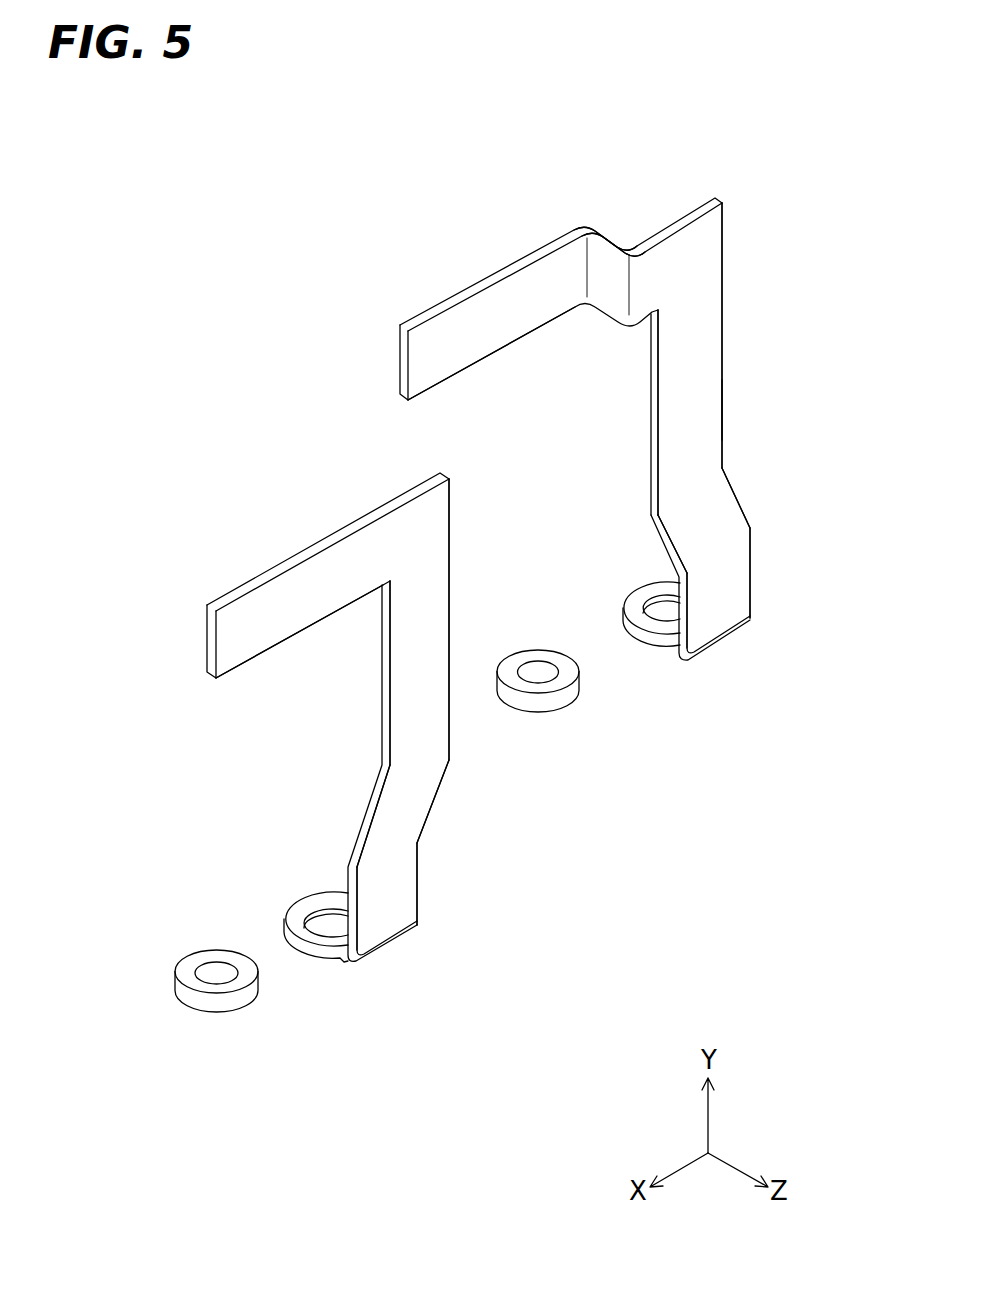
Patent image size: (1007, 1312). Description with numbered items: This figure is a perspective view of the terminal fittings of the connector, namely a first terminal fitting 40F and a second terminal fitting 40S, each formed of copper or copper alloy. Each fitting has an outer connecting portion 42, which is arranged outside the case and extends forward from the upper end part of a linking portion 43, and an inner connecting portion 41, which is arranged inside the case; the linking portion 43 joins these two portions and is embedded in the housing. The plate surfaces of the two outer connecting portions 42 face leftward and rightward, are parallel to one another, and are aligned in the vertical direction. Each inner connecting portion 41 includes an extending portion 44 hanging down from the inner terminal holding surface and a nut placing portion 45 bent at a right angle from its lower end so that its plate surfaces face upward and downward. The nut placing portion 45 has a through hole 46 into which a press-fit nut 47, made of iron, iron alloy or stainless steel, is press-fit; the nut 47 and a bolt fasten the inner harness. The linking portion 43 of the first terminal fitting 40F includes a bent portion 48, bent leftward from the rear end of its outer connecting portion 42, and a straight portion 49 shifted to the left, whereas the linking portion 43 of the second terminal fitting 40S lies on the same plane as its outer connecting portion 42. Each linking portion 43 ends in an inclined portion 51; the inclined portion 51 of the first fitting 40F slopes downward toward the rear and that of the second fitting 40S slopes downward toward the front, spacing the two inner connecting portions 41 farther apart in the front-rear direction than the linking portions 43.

The first terminal fitting 40F is at (497, 303).
The second terminal fitting 40S is at (270, 600).
The inner connecting portion 41 is at (658, 637).
The outer connecting portion 42 is at (440, 338).
The linking portion 43 is at (705, 353).
The extending portion 44 is at (720, 608).
The nut placing portion 45 is at (459, 778).
The through hole 46 is at (658, 603).
The press-fit nut 47 is at (534, 708).
The bent portion 48 is at (603, 256).
The straight portion 49 is at (708, 413).
The inclined portion 51 is at (722, 507).